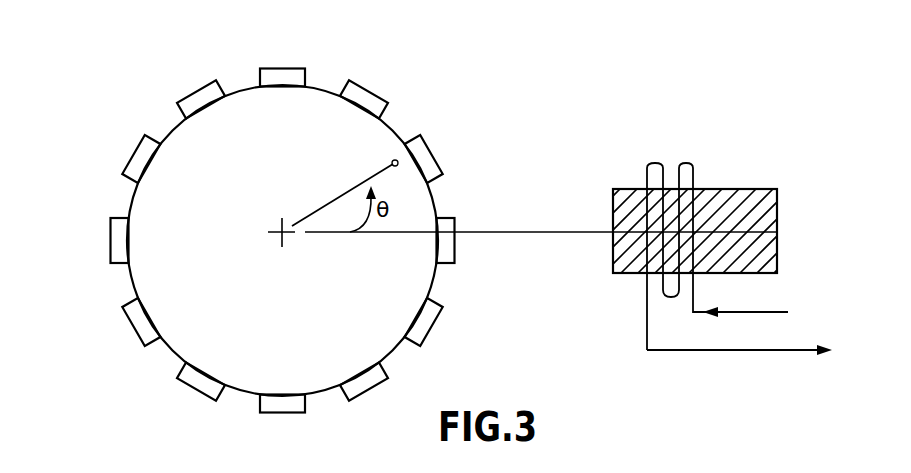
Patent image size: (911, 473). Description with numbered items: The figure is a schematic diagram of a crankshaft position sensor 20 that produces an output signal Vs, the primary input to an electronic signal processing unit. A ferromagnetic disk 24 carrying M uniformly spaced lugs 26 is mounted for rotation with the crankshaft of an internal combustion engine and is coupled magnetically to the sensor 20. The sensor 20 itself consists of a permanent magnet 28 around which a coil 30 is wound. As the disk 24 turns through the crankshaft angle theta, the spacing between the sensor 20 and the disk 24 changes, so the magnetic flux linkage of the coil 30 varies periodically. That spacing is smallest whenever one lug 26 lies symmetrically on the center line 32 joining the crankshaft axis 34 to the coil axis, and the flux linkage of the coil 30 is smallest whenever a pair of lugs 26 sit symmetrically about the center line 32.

The crankshaft position sensor 20 is at (698, 241).
The ferromagnetic disk 24 is at (336, 94).
The lugs 26 is at (432, 153).
The permanent magnet 28 is at (777, 255).
The coil 30 is at (688, 167).
The center line 32 is at (543, 233).
The crankshaft axis 34 is at (285, 238).